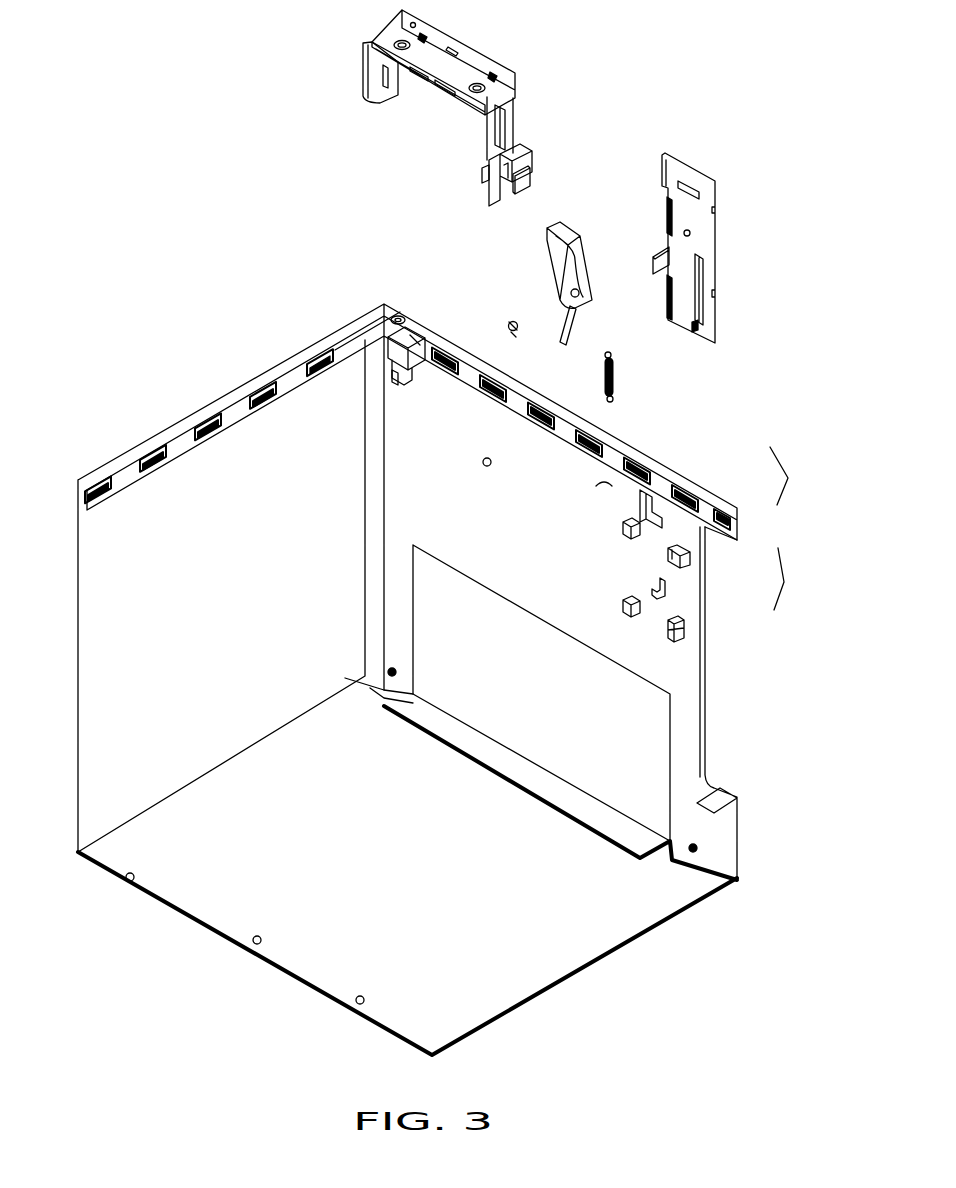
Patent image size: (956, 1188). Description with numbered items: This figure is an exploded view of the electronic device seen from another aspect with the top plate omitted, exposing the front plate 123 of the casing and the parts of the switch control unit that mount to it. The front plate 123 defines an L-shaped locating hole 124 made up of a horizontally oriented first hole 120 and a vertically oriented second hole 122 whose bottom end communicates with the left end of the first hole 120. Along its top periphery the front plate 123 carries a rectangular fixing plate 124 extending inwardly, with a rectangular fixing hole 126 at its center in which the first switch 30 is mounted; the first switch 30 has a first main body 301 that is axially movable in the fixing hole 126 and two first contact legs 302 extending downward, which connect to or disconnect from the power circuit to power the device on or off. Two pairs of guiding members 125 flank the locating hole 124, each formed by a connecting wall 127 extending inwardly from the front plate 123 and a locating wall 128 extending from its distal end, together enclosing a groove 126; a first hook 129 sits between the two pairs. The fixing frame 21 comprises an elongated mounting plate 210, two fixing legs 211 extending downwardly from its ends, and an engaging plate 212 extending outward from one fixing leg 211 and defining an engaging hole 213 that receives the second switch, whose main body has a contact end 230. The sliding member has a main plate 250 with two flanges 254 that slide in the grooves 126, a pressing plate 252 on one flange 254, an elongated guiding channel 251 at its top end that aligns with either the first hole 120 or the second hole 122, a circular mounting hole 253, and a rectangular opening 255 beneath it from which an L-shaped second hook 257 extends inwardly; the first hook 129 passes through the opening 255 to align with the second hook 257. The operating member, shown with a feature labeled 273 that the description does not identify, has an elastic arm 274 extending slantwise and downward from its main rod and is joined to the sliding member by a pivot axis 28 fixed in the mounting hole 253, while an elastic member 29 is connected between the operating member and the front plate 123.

The fixing frame 21 is at (473, 30).
The mounting plate 210 is at (480, 73).
The fixing legs 211 is at (508, 123).
The engaging plate 212 is at (484, 172).
The engaging hole 213 is at (500, 198).
The contact end 230 is at (528, 182).
The lever 273 is at (552, 228).
The elastic arm 274 is at (576, 326).
The main plate 250 is at (690, 212).
The guiding channel 251 is at (702, 185).
The pressing plate 252 is at (652, 258).
The mounting hole 253 is at (690, 236).
The flanges 254 is at (668, 293).
The opening 255 is at (702, 270).
The second hook 257 is at (694, 328).
The elastic member 29 is at (616, 385).
The pivot axis 28 is at (512, 322).
The first switch 30 is at (408, 318).
The first main body 301 is at (395, 357).
The first contact legs 302 is at (335, 362).
The fixing plate 124 is at (345, 296).
The fixing hole 126 is at (700, 545).
The first hole 120 is at (650, 505).
The second hole 122 is at (660, 520).
The front plate 123 is at (597, 488).
The guiding members 125 is at (800, 579).
The connecting wall 127 is at (688, 558).
The locating wall 128 is at (672, 556).
The first hook 129 is at (662, 592).